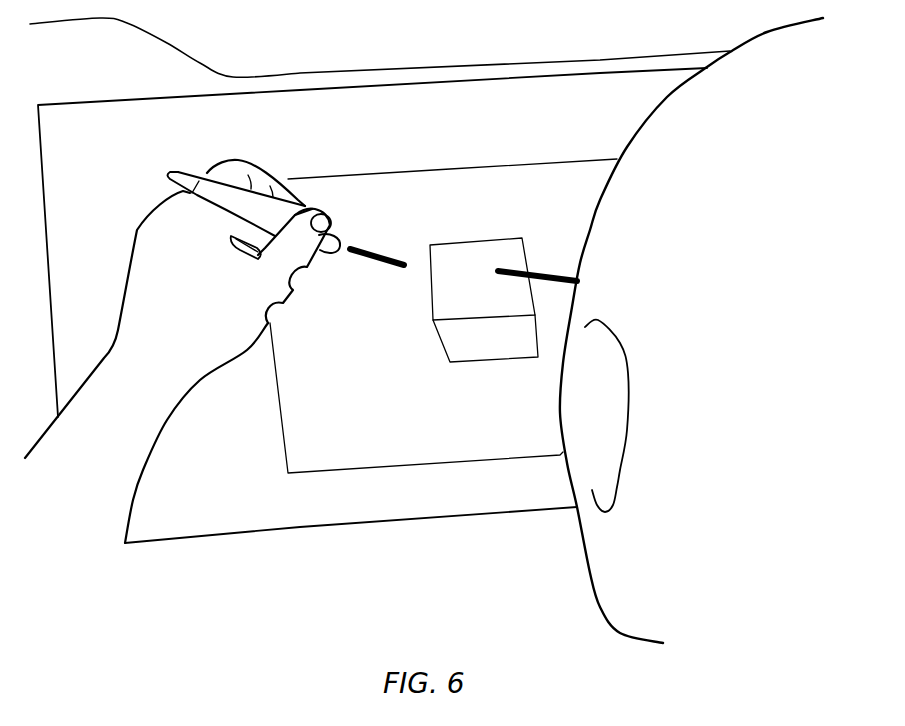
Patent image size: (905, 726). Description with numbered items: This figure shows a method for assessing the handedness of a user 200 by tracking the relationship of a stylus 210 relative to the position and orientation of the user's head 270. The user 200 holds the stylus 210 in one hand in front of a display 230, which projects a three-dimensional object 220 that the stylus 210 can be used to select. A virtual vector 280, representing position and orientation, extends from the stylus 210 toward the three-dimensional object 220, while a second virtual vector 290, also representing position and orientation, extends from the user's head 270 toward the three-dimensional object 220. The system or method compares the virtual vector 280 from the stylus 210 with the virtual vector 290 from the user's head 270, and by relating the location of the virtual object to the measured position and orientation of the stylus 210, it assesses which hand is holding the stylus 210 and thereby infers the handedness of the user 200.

The user 200 is at (200, 306).
The stylus 210 is at (198, 177).
The 3D object 220 is at (500, 348).
The display 230 is at (439, 123).
The user's head 270 is at (754, 258).
The virtual vector 280 is at (373, 252).
The virtual vector 290 is at (550, 266).